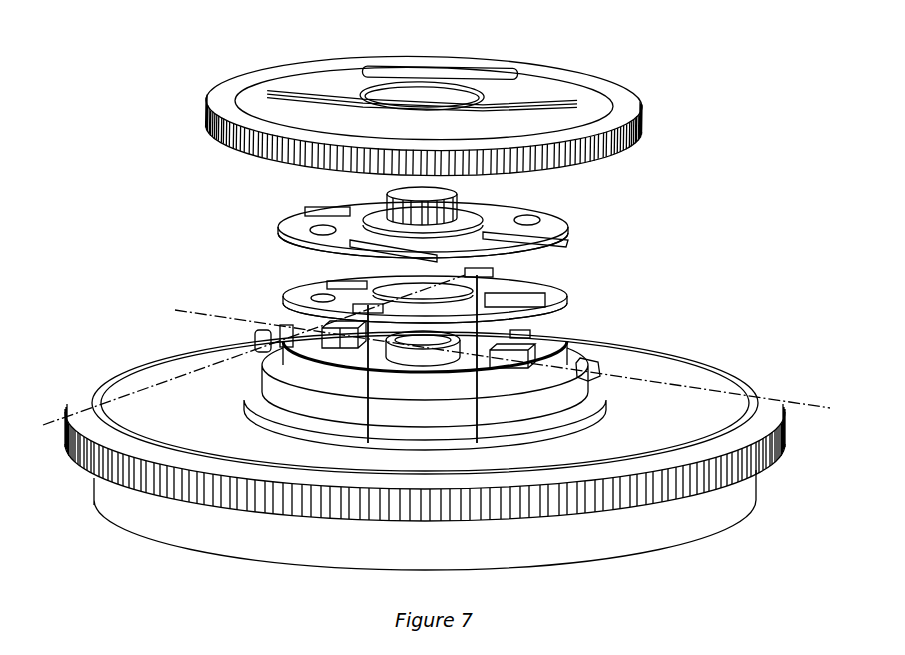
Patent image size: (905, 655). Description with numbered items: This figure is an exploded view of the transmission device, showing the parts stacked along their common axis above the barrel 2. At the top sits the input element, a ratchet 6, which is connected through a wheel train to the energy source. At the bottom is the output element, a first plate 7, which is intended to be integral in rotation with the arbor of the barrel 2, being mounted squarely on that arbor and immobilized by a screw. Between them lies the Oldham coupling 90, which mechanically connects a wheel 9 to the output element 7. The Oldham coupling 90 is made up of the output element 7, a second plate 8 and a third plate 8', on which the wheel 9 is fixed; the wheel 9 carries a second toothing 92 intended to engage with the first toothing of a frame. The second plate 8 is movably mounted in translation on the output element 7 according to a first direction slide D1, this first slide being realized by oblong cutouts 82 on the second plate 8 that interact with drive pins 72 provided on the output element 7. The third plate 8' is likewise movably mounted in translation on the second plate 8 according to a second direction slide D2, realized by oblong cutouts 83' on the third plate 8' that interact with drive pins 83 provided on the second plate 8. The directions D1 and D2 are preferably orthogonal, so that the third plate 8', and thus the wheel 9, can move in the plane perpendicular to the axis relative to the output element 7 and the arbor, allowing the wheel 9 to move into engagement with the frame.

The barrel 2 is at (94, 376).
The ratchet 6 is at (570, 88).
The first plate 7 is at (353, 358).
The second plate 8 is at (497, 238).
The third plate 8' is at (517, 174).
The wheel 9 is at (420, 196).
The second toothing 92 is at (459, 196).
The oblong cutouts 82 is at (324, 279).
The drive pins 83 is at (422, 372).
The oblong cutouts 83' is at (443, 218).
The drive pins 72 is at (337, 340).
The Oldham coupling 90 is at (543, 300).
The first direction slide D1 is at (817, 412).
The second direction slide D2 is at (43, 425).